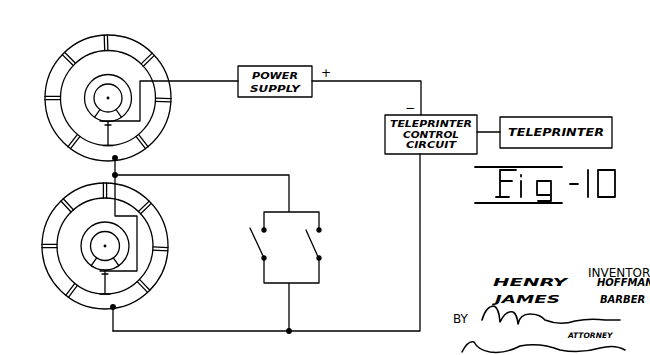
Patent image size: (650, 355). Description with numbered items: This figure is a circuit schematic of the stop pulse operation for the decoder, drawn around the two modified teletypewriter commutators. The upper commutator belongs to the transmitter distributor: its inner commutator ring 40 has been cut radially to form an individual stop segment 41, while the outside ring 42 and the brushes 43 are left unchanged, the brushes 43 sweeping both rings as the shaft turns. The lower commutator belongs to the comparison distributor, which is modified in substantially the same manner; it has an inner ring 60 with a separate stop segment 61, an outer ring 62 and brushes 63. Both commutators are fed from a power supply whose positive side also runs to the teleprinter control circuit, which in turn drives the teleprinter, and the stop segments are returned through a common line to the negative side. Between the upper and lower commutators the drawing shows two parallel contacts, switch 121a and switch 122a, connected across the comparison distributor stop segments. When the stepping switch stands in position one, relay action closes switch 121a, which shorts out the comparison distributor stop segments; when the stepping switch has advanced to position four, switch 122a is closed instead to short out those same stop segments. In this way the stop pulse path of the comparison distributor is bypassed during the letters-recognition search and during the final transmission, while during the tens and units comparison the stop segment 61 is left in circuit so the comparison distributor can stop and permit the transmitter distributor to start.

The inner commutator ring 40 is at (108, 75).
The stop segment 41 is at (98, 119).
The outside ring 42 is at (80, 155).
The brushes 43 is at (110, 128).
The inner ring 60 is at (85, 227).
The stop segment 61 is at (96, 266).
The outer ring 62 is at (162, 214).
The brushes 63 is at (99, 284).
The switch 121a is at (256, 245).
The switch 122a is at (320, 243).